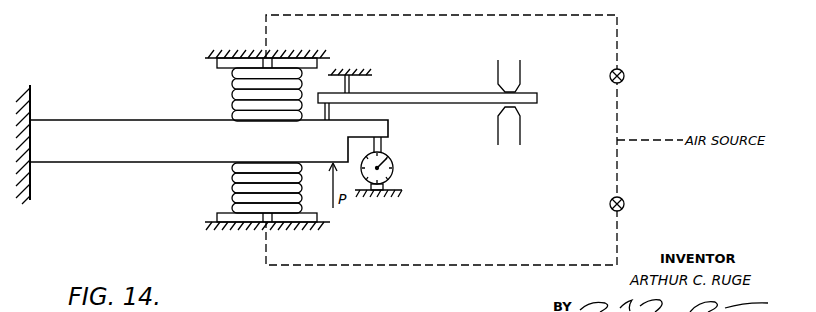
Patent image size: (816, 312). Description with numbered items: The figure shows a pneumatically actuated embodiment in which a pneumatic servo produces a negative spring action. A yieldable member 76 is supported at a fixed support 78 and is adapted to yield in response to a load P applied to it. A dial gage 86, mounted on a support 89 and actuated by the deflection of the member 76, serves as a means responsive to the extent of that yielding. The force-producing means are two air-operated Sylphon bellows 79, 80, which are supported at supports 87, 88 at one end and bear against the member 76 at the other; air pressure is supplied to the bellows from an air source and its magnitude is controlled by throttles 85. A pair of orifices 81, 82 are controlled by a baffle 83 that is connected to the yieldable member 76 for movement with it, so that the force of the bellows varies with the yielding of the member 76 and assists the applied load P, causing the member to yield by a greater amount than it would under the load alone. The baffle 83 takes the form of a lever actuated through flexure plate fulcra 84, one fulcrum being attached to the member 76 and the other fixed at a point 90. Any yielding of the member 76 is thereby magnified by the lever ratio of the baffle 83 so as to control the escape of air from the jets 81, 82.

The member 76 is at (134, 120).
The support 78 is at (30, 130).
The Sylphon bellows 79 is at (232, 95).
The Sylphon bellows 80 is at (232, 185).
The orifice 81 is at (513, 77).
The orifice 82 is at (512, 132).
The baffle 83 is at (451, 93).
The flexure plate fulcra 84 is at (330, 114).
The throttles 85 is at (624, 76).
The dial gage 86 is at (392, 160).
The support 87 is at (257, 57).
The support 88 is at (246, 230).
The support 89 is at (383, 193).
The fixed point 90 is at (352, 74).